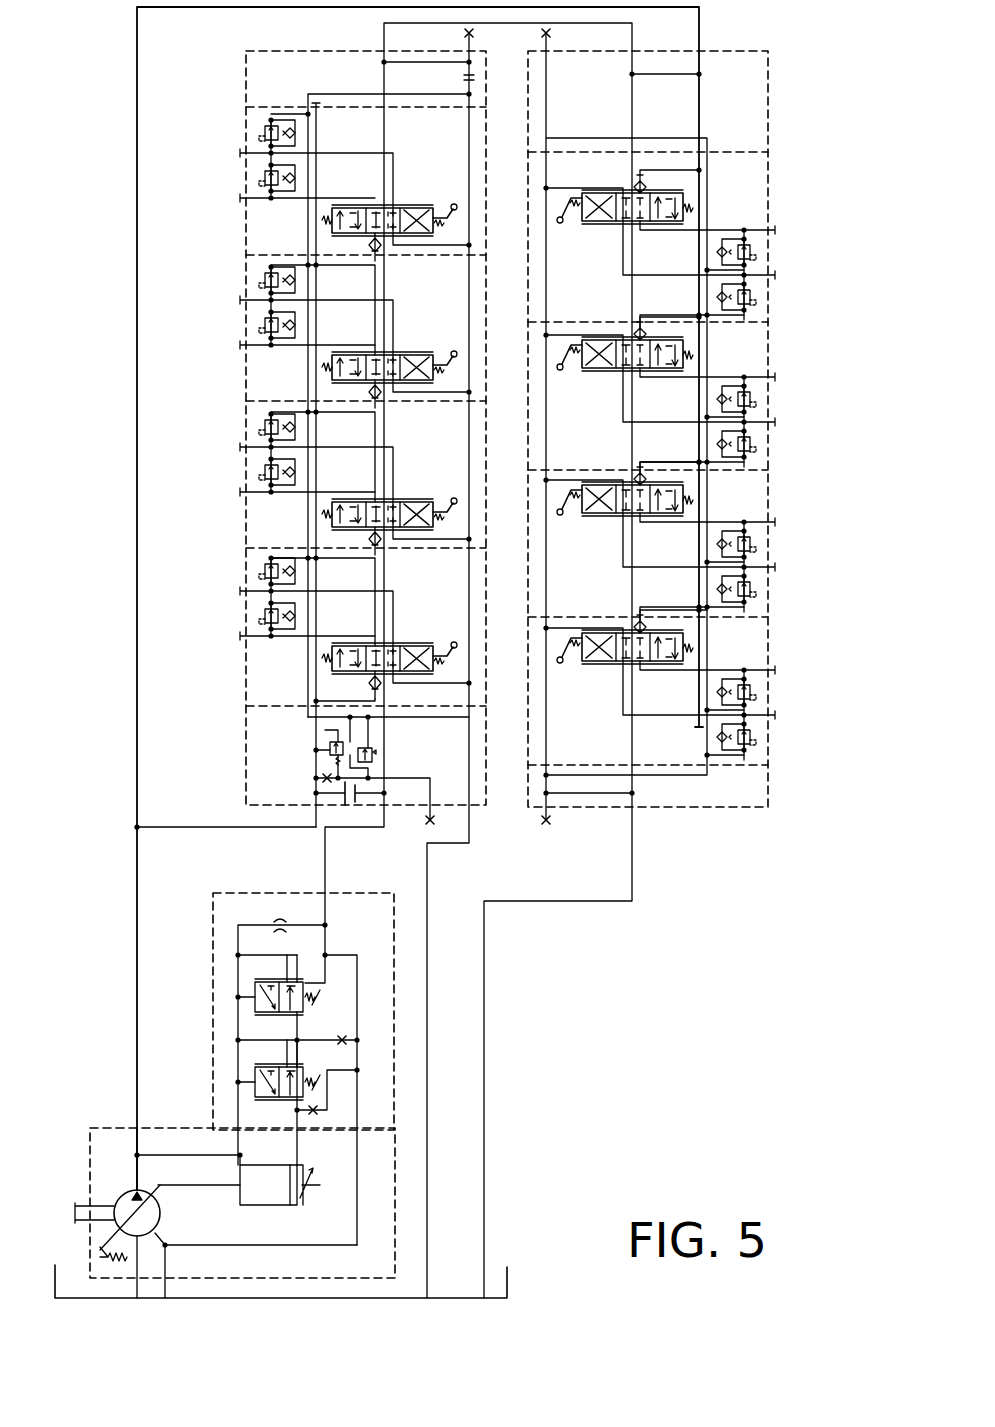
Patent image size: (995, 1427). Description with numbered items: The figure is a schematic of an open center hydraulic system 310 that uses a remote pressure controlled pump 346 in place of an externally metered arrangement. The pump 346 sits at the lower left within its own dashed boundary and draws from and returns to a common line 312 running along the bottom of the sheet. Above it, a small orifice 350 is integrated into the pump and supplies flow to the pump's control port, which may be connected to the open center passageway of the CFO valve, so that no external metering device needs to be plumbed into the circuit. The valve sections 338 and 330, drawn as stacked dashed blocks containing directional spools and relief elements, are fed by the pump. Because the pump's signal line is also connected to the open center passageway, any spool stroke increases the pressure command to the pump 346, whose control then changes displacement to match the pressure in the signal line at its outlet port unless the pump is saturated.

The hydraulic system 310 is at (79, 237).
The valve bank section 338 is at (305, 687).
The valve section 330 is at (387, 705).
The small orifice 350 is at (286, 910).
The remote pressure controlled pump 346 is at (107, 1128).
The return line 312 is at (509, 1285).